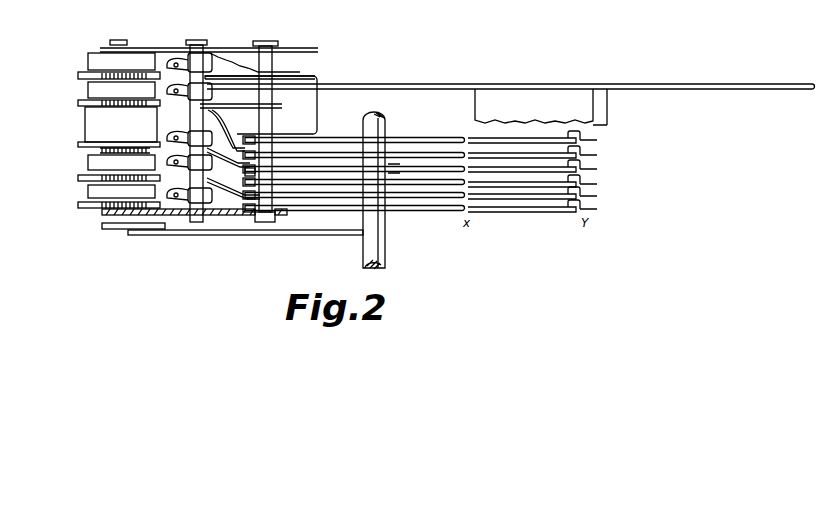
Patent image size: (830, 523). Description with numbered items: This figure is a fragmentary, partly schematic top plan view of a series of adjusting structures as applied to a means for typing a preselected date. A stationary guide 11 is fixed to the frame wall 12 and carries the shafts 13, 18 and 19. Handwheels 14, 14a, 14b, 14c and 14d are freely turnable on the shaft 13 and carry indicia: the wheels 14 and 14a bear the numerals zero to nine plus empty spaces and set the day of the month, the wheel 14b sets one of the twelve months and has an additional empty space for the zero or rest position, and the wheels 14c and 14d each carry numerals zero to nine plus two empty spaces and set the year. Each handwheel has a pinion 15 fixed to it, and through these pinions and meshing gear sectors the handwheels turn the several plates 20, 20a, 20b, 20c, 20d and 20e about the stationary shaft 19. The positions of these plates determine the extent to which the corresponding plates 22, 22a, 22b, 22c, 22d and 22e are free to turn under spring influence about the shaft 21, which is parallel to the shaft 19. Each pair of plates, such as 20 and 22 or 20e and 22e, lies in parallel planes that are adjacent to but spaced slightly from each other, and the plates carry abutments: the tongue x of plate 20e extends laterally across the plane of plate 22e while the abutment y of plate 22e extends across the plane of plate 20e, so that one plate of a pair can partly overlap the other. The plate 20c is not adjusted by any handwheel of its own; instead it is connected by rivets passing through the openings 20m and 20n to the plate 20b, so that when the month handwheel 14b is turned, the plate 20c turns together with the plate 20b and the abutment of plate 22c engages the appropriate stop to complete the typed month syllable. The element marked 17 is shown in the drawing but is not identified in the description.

The stationary guide 11 is at (157, 52).
The frame wall 12 is at (552, 85).
The shaft 13 is at (118, 216).
The handwheel 14 is at (88, 60).
The handwheel 14a is at (88, 90).
The handwheel 14b is at (86, 122).
The handwheel 14c is at (88, 161).
The handwheel 14d is at (88, 191).
The pinion 15 is at (133, 218).
The pawl 17 is at (176, 62).
The shaft 18 is at (199, 48).
The stationary shaft 19 is at (270, 42).
The plate 20 is at (335, 138).
The plate 20a is at (348, 152).
The plate 20b is at (430, 168).
The plate 20c is at (420, 176).
The plate 20d is at (443, 193).
The plate 20e is at (337, 204).
The opening 20m is at (245, 172).
The opening 20n is at (395, 170).
The shaft 21 is at (365, 241).
The plate 22 is at (595, 142).
The plate 22a is at (597, 156).
The plate 22b is at (597, 170).
The plate 22c is at (597, 184).
The plate 22d is at (597, 197).
The plate 22e is at (597, 211).